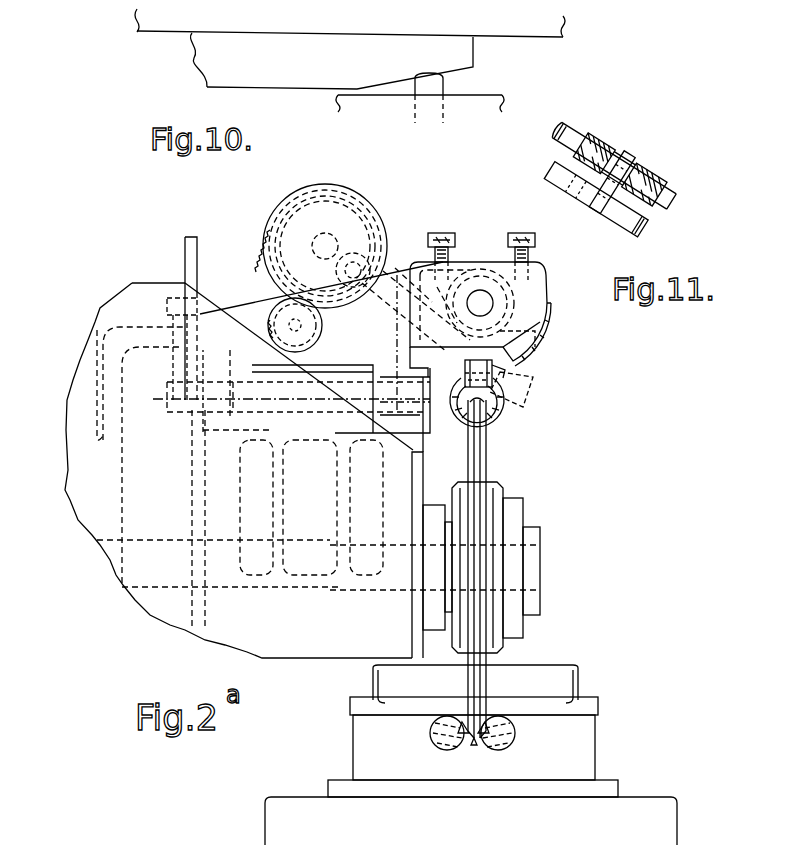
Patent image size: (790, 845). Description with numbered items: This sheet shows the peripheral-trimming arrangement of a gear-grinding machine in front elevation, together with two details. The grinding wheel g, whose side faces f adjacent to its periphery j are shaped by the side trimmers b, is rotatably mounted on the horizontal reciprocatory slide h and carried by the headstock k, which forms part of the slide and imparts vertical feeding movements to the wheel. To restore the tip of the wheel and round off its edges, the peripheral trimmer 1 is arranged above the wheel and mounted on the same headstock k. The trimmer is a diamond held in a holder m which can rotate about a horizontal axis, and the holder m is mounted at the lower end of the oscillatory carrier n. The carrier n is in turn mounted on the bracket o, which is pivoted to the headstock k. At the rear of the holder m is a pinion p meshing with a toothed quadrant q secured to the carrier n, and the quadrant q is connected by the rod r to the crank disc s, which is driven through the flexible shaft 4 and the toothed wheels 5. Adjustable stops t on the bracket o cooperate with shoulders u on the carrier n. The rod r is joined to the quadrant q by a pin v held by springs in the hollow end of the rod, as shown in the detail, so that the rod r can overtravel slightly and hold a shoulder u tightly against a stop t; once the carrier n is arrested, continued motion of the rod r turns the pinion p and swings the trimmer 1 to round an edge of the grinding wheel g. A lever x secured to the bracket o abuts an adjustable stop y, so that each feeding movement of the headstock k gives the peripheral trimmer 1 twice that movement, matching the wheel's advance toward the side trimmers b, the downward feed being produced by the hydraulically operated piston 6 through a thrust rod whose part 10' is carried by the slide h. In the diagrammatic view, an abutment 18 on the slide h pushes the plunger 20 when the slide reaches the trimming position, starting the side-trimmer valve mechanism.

In FIG. 10, the reciprocatory slide h is at (177, 20).
In FIG. 10, the abutment 18 is at (292, 75).
In FIG. 10, the plunger 20 is at (433, 84).
In FIG. 2A, the rod r is at (416, 310).
In FIG. 2A, the pin v is at (522, 367).
In FIG. 2A, the toothed quadrant q is at (549, 321).
In FIG. 2A, the headstock k is at (330, 643).
In FIG. 2A, the thrust rod part 10' is at (212, 318).
In FIG. 2A, the adjustable stop y is at (167, 307).
In FIG. 2A, the lever x is at (222, 353).
In FIG. 2A, the toothed wheels 5 is at (325, 325).
In FIG. 2A, the crank disc s is at (350, 224).
In FIG. 2A, the flexible shaft 4 is at (303, 331).
In FIG. 2A, the bracket o is at (538, 270).
In FIG. 2A, the shoulders u is at (440, 290).
In FIG. 2A, the adjustable stops t is at (508, 241).
In FIG. 2A, the carrier n is at (512, 353).
In FIG. 2A, the holder m is at (500, 373).
In FIG. 2A, the peripheral trimmer 1 is at (467, 367).
In FIG. 2A, the pinion p is at (505, 407).
In FIG. 2A, the grinding wheel g is at (480, 452).
In FIG. 2A, the hydraulically operated piston 6 is at (441, 415).
In FIG. 2A, the side faces f is at (480, 469).
In FIG. 2A, the rollers c is at (436, 746).
In FIG. 2A, the side trimmers b is at (485, 728).
In FIG. 2A, the periphery J is at (474, 742).